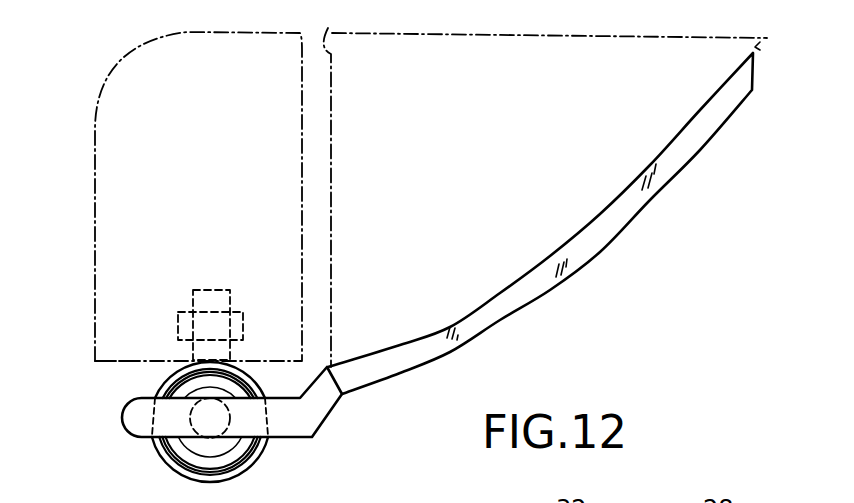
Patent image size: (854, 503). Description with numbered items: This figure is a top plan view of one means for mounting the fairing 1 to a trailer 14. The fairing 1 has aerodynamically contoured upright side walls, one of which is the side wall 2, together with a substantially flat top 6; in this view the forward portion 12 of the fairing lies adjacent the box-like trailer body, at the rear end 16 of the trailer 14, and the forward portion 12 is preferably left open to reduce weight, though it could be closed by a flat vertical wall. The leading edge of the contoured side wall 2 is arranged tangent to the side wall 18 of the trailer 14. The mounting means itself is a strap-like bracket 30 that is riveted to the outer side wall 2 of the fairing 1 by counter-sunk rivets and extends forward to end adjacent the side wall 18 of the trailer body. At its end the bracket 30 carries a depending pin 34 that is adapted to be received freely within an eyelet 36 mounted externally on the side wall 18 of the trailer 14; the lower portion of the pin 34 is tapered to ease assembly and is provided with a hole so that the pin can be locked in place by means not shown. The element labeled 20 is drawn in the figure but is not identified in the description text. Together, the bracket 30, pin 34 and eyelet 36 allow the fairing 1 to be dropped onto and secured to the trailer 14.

The fairing 1 is at (745, 32).
The upright side wall 2 is at (757, 47).
The top 6 is at (480, 188).
The forward portion 12 is at (335, 16).
The trailer 14 is at (216, 199).
The rear end of the trailer 16 is at (312, 8).
The side wall of the trailer 18 is at (133, 363).
The frame bar 20 is at (346, 416).
The strap-like bracket 30 is at (500, 316).
The depending pin 34 is at (265, 452).
The eyelet 36 is at (167, 467).